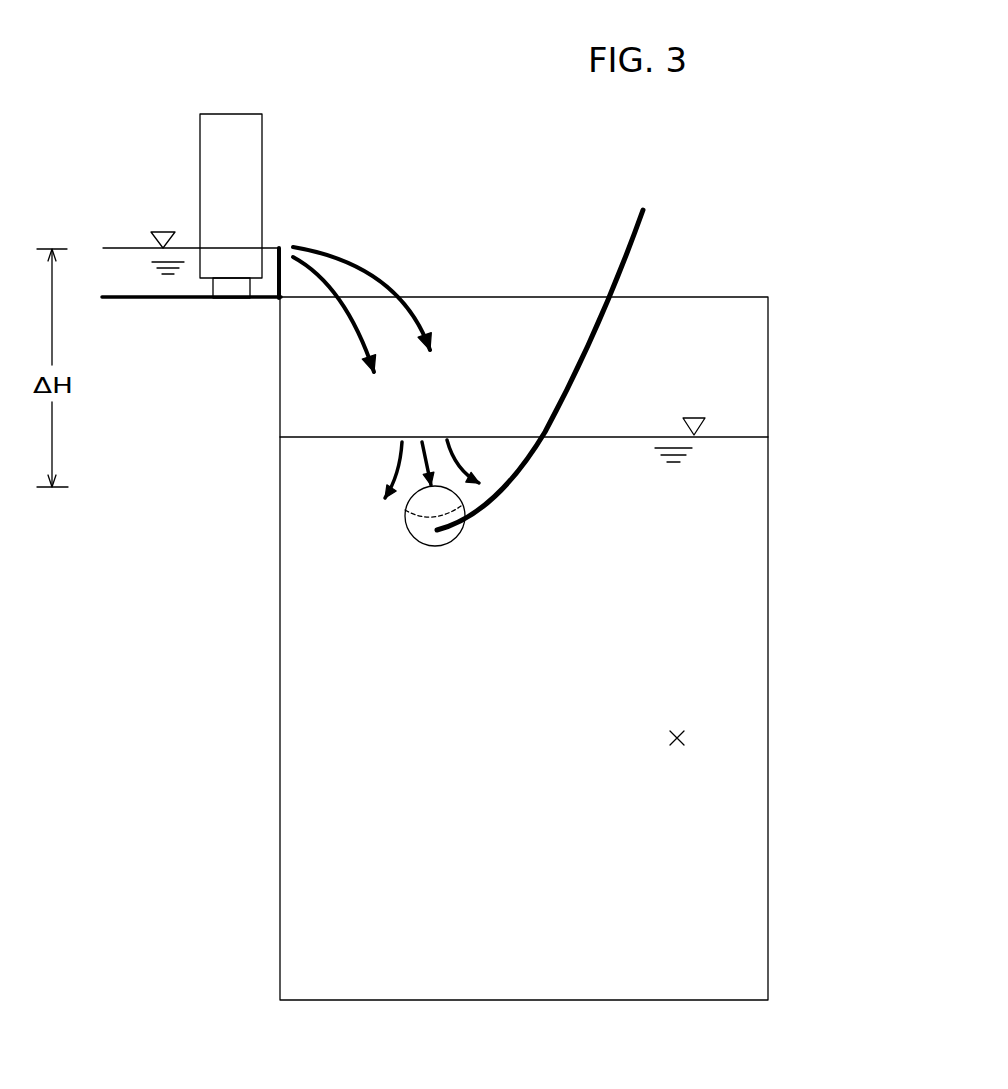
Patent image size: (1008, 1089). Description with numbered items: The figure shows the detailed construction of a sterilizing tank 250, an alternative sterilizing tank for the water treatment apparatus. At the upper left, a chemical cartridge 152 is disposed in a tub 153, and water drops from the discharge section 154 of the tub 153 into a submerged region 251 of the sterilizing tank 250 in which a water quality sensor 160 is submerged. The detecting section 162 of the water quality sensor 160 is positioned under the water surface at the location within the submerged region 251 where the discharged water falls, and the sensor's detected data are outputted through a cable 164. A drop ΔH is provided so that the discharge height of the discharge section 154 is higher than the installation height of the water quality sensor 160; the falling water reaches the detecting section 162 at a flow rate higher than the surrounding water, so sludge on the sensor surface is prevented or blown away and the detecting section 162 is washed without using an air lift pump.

The chemical cartridge 152 is at (264, 165).
The tub 153 is at (203, 298).
The discharge section 154 is at (291, 239).
The water quality sensor 160 is at (418, 541).
The detecting section 162 is at (411, 512).
The cable 164 is at (638, 248).
The sterilizing tank 250 is at (769, 457).
The submerged region 251 is at (685, 742).